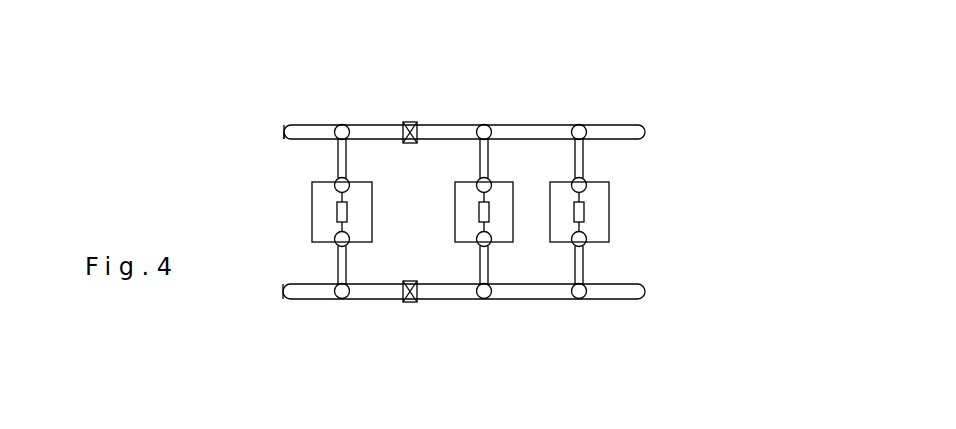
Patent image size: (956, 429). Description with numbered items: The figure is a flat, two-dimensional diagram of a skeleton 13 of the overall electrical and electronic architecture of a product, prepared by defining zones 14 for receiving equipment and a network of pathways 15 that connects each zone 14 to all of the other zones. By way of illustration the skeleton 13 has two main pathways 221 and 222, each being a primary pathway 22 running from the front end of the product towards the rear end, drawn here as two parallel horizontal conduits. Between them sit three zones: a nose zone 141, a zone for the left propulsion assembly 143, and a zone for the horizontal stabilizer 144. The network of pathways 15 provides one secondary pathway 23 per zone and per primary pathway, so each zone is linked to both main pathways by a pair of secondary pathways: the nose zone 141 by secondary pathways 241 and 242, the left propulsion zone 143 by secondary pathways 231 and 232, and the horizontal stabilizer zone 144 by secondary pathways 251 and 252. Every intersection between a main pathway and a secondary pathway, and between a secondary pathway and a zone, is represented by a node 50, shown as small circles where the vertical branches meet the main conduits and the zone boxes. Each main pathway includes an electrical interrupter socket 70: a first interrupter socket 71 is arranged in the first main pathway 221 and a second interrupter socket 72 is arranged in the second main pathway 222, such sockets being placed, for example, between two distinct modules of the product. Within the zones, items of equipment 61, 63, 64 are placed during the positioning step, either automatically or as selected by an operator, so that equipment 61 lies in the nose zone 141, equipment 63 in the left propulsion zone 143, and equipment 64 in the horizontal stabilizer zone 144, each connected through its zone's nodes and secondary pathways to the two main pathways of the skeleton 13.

The skeleton 13 is at (485, 71).
The zone 14 is at (679, 220).
The network of pathways 15 is at (258, 103).
The primary pathway 22 is at (245, 125).
The secondary pathway 23 is at (633, 134).
The node 50 is at (338, 124).
The equipment 61 is at (337, 212).
The equipment 63 is at (478, 210).
The equipment 64 is at (587, 212).
The electrical interrupter socket 70 is at (425, 73).
The first interrupter socket 71 is at (420, 93).
The second interrupter socket 72 is at (410, 303).
The nose zone 141 is at (306, 213).
The zone for the left propulsion assembly 143 is at (447, 214).
The zone for the horizontal stabilizer 144 is at (618, 212).
The first main pathway 221 is at (642, 123).
The second main pathway 222 is at (645, 287).
The secondary pathway 231 is at (488, 158).
The secondary pathway 232 is at (489, 265).
The secondary pathway 241 is at (346, 150).
The secondary pathway 242 is at (348, 262).
The secondary pathway 251 is at (584, 150).
The secondary pathway 252 is at (584, 256).